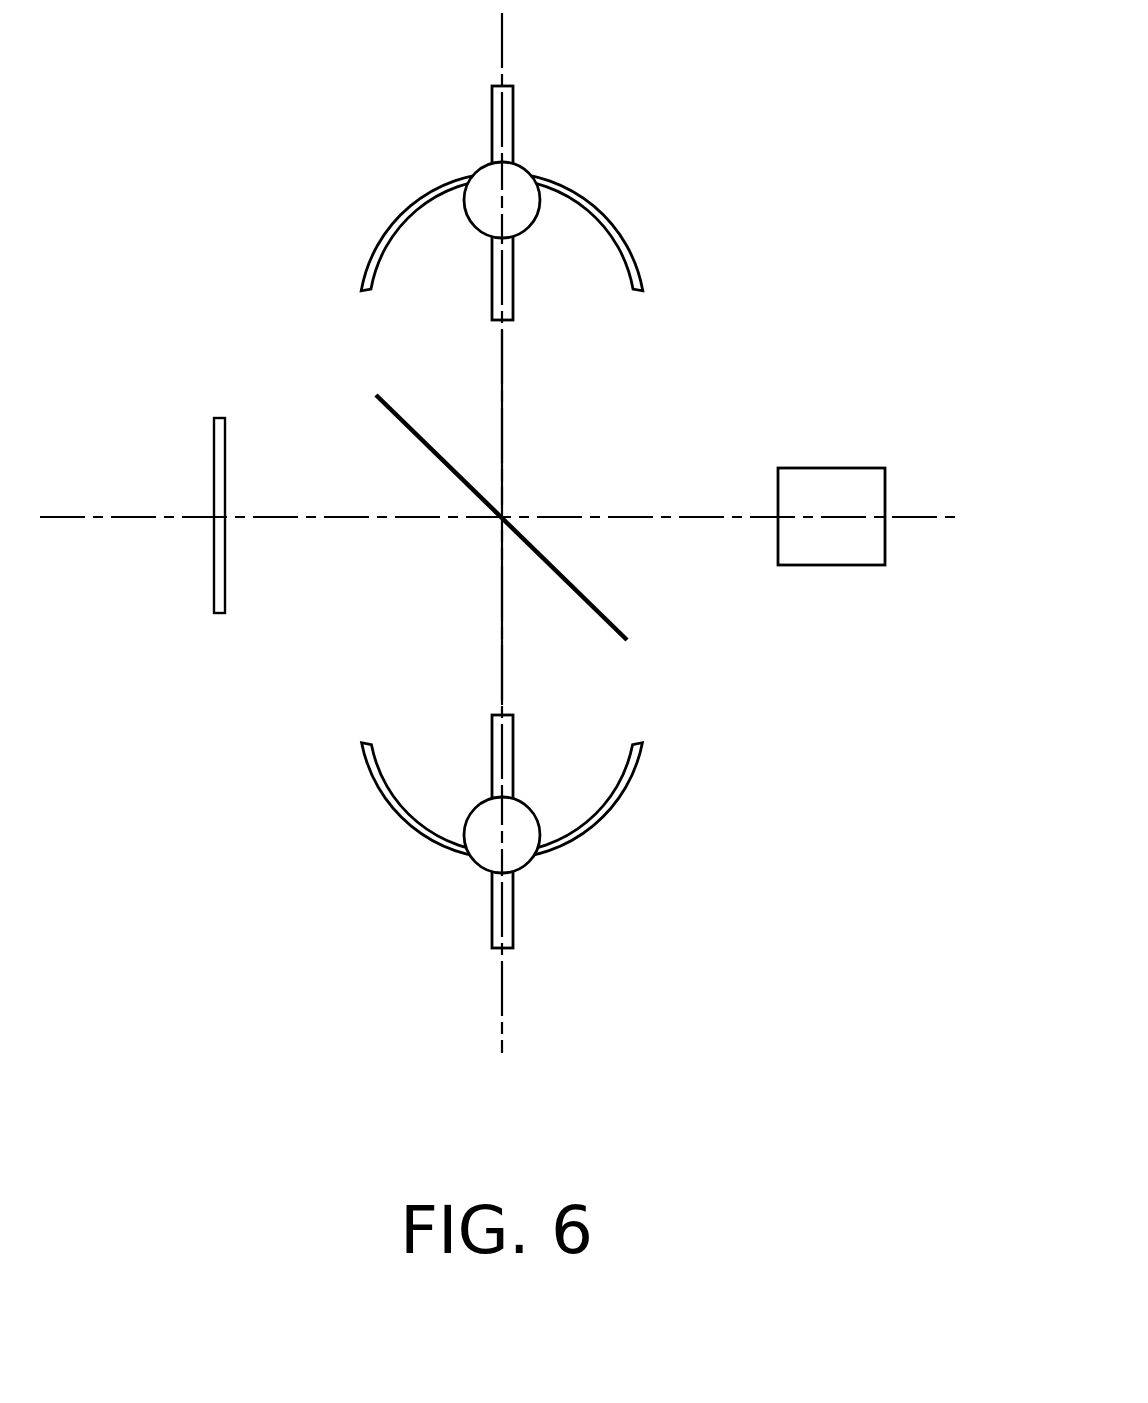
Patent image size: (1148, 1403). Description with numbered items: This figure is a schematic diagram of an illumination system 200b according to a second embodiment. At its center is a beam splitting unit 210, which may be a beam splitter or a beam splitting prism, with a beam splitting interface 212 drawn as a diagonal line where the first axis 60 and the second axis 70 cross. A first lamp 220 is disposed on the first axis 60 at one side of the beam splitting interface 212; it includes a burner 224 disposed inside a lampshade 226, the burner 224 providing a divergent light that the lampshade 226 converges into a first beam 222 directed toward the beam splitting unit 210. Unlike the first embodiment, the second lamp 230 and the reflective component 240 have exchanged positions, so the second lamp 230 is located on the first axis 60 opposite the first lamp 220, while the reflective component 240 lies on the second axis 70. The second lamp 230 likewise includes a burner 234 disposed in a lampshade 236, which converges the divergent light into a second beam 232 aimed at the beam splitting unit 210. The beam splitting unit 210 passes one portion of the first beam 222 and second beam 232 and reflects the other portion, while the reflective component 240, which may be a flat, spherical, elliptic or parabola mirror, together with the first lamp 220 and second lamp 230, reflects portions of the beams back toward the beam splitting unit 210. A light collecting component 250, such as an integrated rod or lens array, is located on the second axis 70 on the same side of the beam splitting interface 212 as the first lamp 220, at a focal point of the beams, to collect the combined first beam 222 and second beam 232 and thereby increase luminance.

The first axis 60 is at (502, 42).
The second axis 70 is at (937, 516).
The illumination system 200b is at (535, 1108).
The beam splitting unit 210 is at (555, 560).
The beam splitting interface 212 is at (595, 625).
The first lamp 220 is at (624, 203).
The first beam 222 is at (530, 400).
The burner 224 is at (522, 190).
The lampshade 226 is at (583, 158).
The second lamp 230 is at (624, 831).
The second beam 232 is at (467, 678).
The burner 234 is at (583, 875).
The lampshade 236 is at (522, 847).
The reflective component 240 is at (220, 615).
The light collecting component 250 is at (830, 548).